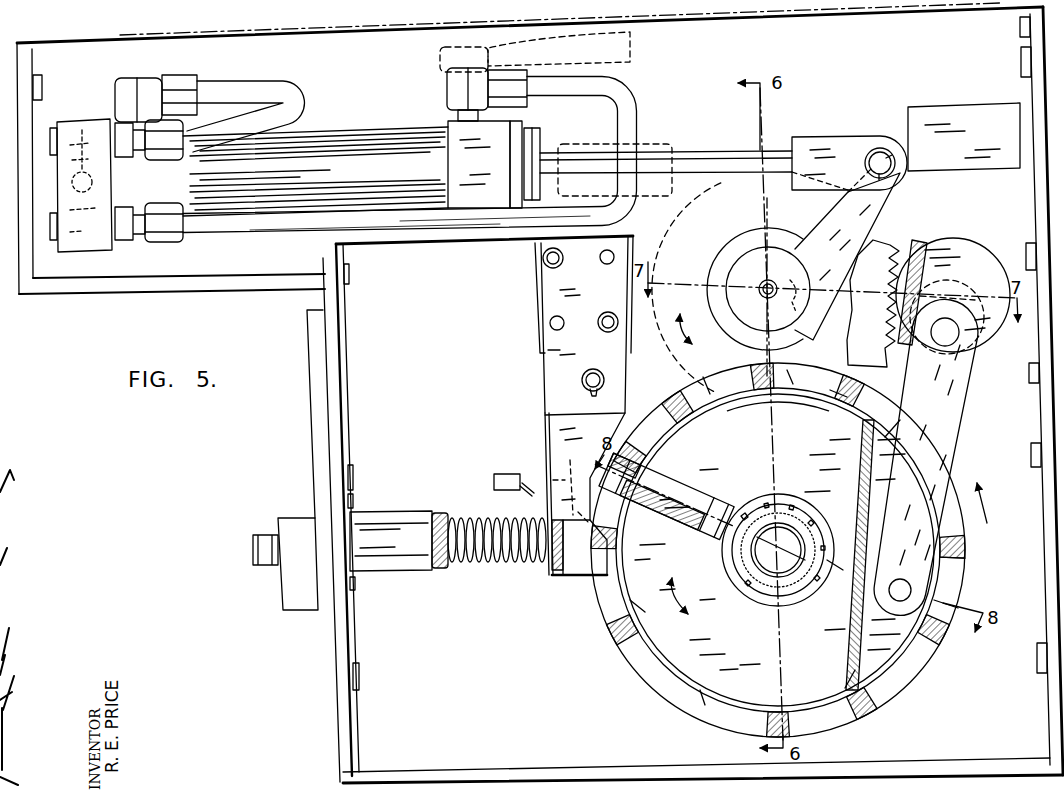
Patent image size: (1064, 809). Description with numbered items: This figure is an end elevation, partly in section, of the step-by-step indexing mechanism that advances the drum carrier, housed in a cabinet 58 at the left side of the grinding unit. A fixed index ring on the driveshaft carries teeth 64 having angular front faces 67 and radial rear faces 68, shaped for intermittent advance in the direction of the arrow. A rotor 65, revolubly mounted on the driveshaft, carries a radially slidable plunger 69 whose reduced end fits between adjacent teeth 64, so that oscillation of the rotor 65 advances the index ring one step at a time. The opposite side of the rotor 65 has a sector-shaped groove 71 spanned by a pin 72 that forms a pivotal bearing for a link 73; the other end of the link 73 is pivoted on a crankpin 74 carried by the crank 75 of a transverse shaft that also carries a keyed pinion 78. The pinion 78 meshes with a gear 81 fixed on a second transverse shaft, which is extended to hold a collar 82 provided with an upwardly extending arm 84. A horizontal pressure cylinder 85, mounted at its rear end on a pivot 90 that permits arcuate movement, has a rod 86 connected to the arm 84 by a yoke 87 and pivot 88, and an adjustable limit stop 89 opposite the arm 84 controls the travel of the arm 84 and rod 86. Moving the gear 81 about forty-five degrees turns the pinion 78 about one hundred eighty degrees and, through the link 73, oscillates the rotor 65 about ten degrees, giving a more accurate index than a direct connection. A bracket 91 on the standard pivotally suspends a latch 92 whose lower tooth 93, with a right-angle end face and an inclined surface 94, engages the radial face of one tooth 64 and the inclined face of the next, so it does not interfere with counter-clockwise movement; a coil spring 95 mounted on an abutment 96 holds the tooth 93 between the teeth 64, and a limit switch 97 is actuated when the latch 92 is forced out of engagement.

The cabinet 58 is at (362, 346).
The teeth 64 is at (957, 586).
The rotor 65 is at (670, 630).
The angular front faces 67 is at (960, 569).
The radial rear faces 68 is at (885, 687).
The plunger 69 is at (680, 480).
The groove 71 is at (870, 682).
The pin 72 is at (860, 611).
The link 73 is at (950, 431).
The crankpin 74 is at (950, 334).
The crank 75 is at (970, 261).
The pinion 78 is at (905, 262).
The gear 81 is at (884, 298).
The collar 82 is at (753, 313).
The arm 84 is at (888, 204).
The pressure cylinder 85 is at (343, 157).
The rod 86 is at (704, 163).
The yoke 87 is at (843, 147).
The pivot 88 is at (882, 160).
The limit stop 89 is at (970, 125).
The pivot 90 is at (81, 128).
The bracket 91 is at (561, 377).
The latch 92 is at (558, 432).
The tooth 93 is at (593, 568).
The inclined surface 94 is at (578, 560).
The coil spring 95 is at (508, 563).
The abutment 96 is at (387, 513).
The limit switch 97 is at (496, 481).